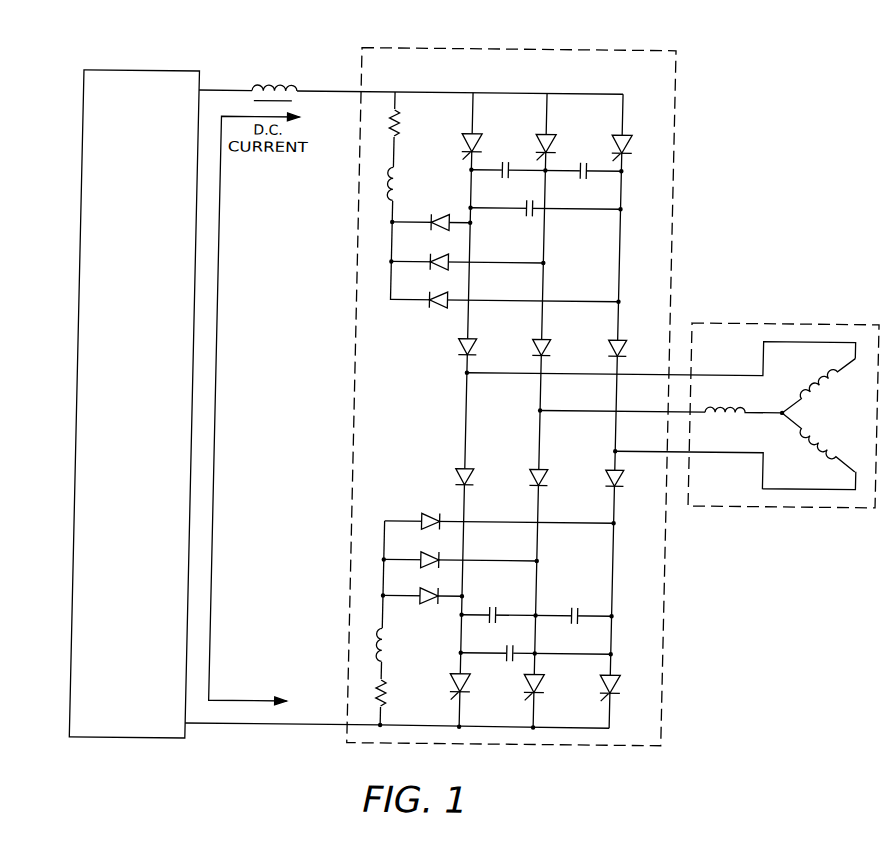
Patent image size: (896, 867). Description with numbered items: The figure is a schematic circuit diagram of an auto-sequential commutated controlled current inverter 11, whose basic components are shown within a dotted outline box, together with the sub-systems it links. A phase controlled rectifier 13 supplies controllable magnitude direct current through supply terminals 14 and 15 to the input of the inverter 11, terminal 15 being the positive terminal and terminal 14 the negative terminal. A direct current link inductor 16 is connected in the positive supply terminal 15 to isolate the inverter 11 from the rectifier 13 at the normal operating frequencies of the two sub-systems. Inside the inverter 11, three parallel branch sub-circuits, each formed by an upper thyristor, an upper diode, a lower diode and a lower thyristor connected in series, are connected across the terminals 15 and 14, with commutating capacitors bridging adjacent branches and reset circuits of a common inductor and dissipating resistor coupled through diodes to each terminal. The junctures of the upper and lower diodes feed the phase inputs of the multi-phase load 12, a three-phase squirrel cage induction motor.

The auto-sequential commutated inverter 11 is at (491, 43).
The multi-phase load 12 is at (752, 315).
The phase controlled rectifier 13 is at (87, 151).
The supply terminal 14 is at (304, 722).
The supply terminal 15 is at (220, 86).
The direct current link inductor 16 is at (299, 92).